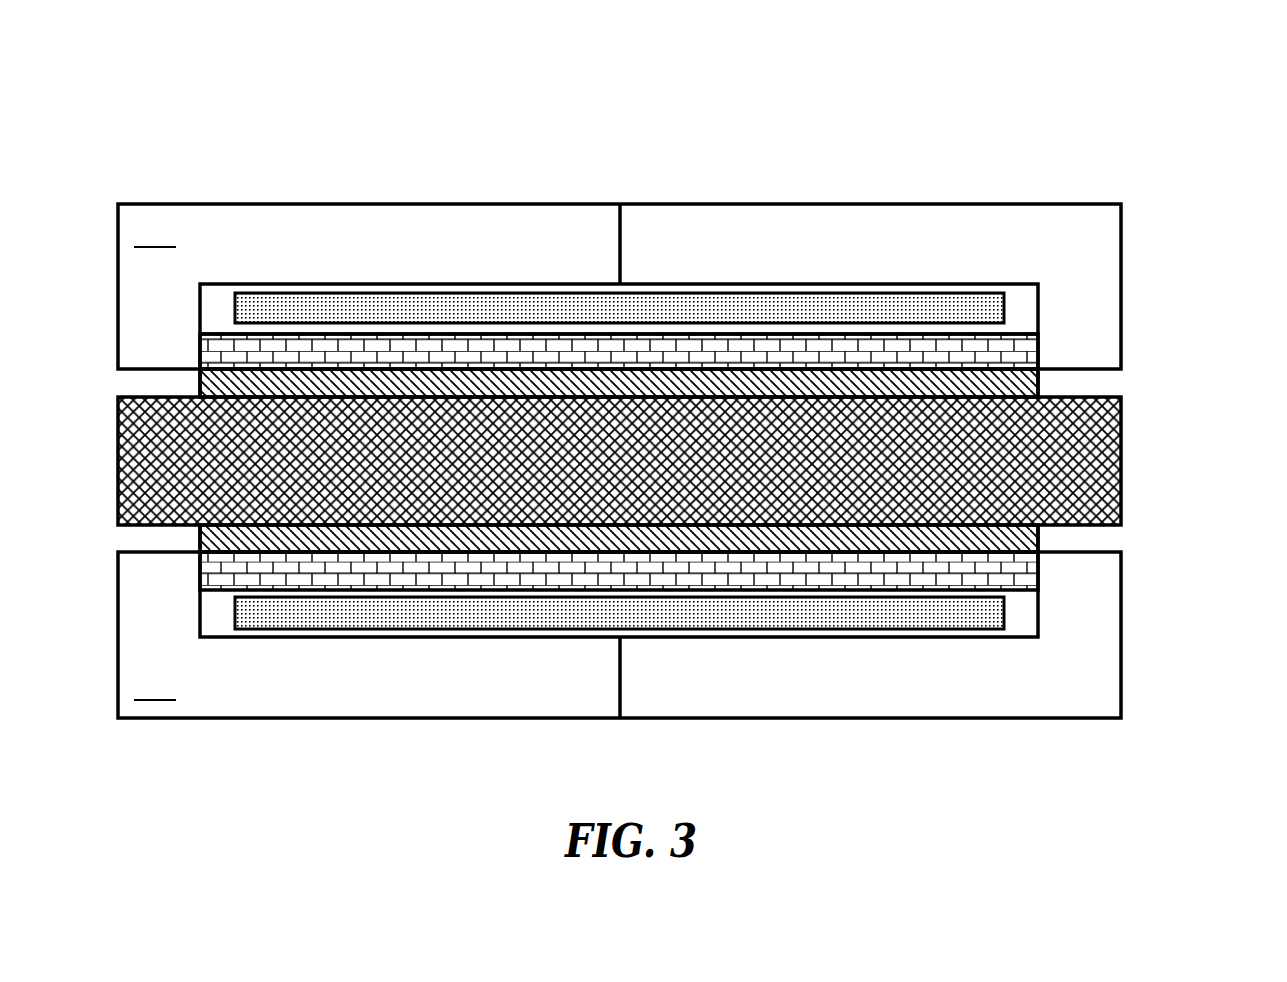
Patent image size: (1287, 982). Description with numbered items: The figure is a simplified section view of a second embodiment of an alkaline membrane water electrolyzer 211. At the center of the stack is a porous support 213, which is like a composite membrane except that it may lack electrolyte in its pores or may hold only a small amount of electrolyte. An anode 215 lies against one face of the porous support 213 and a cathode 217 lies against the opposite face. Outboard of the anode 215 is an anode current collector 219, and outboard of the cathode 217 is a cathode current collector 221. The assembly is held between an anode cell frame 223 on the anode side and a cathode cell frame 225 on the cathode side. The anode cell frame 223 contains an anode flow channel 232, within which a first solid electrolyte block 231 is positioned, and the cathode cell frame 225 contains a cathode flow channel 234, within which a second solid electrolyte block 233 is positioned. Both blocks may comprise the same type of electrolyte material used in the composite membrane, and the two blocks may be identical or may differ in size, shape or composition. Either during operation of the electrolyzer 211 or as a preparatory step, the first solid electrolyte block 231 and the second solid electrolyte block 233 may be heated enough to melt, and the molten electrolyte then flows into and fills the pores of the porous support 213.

The alkaline membrane water electrolyzer 211 is at (652, 433).
The porous support 213 is at (1121, 455).
The anode 215 is at (1038, 390).
The cathode 217 is at (200, 535).
The anode current collector 219 is at (1038, 350).
The cathode current collector 221 is at (1038, 570).
The anode cell frame 223 is at (619, 286).
The cathode cell frame 225 is at (619, 635).
The first solid electrolyte block 231 is at (305, 293).
The anode flow channel 232 is at (222, 270).
The second solid electrolyte block 233 is at (819, 630).
The cathode flow channel 234 is at (222, 648).